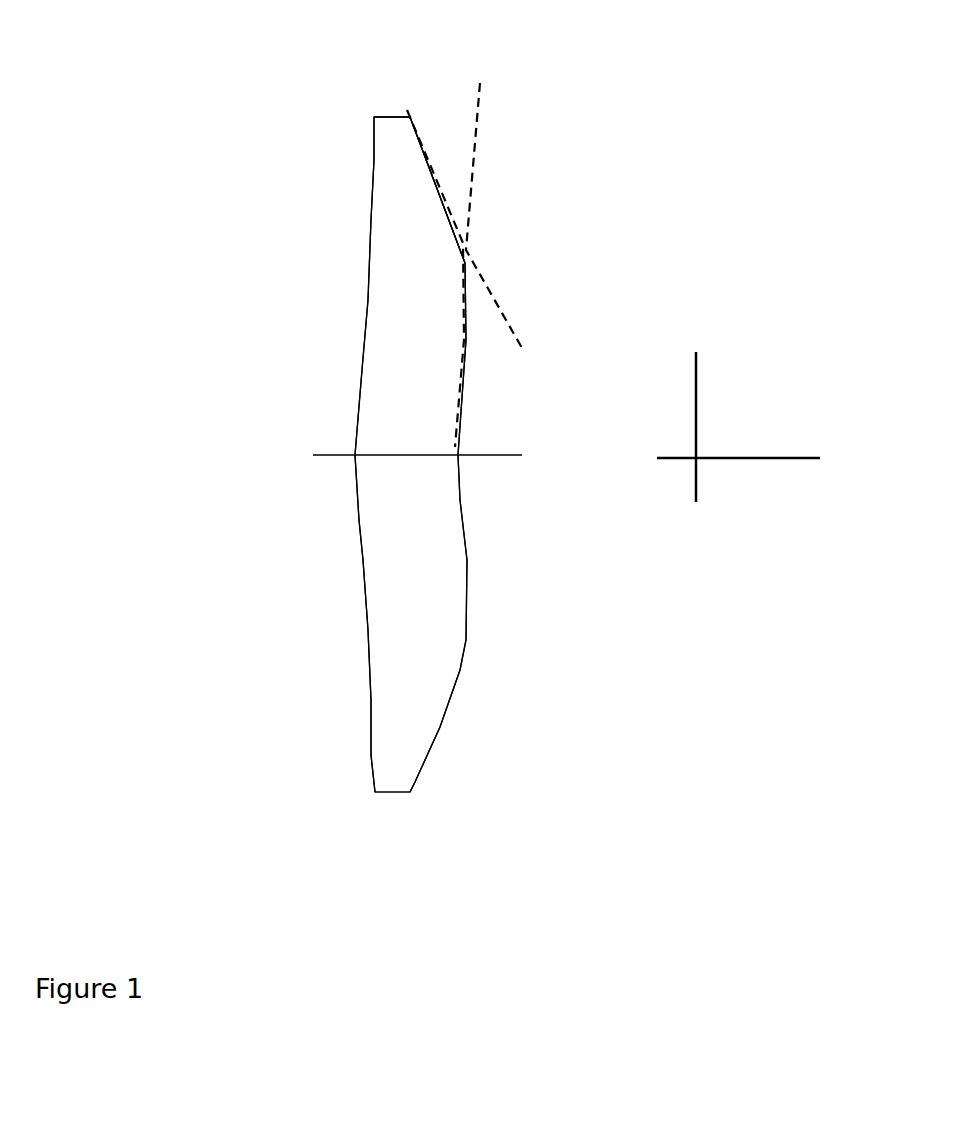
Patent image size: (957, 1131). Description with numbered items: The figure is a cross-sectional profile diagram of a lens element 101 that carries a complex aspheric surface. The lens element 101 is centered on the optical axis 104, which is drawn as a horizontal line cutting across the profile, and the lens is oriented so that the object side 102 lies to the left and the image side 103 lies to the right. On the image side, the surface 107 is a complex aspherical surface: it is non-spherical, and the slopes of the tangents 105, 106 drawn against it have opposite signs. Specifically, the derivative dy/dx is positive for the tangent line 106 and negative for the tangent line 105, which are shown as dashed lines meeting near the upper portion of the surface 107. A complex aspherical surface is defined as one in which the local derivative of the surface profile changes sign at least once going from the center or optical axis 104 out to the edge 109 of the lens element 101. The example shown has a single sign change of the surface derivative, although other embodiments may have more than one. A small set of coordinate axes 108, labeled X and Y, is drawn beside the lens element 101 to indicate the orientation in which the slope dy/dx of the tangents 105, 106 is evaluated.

The lens element 101 is at (413, 868).
The object side 102 is at (332, 525).
The image side 103 is at (508, 529).
The optical axis 104 is at (318, 437).
The tangent line 105 is at (434, 135).
The tangent line 106 is at (490, 175).
The complex aspherical surface 107 is at (480, 370).
The coordinate axes 108 is at (715, 561).
The edge 109 is at (403, 102).